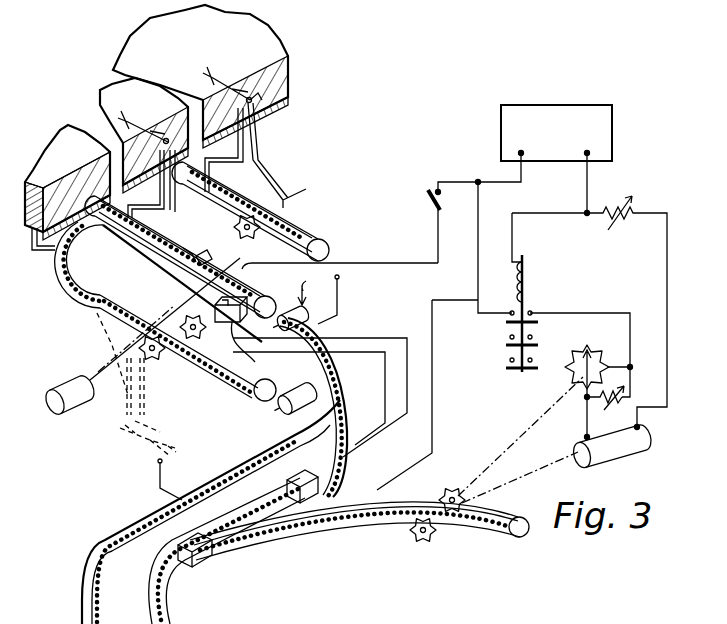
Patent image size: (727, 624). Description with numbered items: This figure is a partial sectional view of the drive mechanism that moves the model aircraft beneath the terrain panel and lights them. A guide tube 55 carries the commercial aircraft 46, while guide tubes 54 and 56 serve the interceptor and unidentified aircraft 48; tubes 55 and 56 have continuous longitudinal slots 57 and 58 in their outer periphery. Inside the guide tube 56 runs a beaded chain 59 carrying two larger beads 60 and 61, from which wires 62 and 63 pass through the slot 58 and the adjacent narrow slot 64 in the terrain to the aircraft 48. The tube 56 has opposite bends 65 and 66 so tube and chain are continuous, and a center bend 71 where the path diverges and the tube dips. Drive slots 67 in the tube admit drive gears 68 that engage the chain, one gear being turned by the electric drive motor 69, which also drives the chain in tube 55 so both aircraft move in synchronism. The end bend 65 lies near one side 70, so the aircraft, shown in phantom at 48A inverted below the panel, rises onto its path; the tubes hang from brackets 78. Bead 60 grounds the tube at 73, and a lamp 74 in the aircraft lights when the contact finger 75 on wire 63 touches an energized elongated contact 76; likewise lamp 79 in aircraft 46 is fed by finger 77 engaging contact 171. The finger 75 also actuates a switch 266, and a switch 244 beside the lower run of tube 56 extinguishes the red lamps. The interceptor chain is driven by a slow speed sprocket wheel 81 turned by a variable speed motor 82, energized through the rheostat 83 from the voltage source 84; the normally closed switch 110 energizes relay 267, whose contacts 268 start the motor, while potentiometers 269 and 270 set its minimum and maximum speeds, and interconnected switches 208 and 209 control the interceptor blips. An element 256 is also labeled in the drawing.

The side 70 is at (119, 56).
The unidentified aircraft 48 is at (141, 135).
The narrow slot 64 is at (77, 124).
The lamp 74 is at (166, 135).
The lamp 79 is at (250, 97).
The commercial aircraft 46 is at (253, 103).
The contact 171 is at (200, 137).
The contact finger 77 is at (288, 201).
The wire 62 is at (166, 204).
The wire 63 is at (177, 208).
The elongated contact means 76 is at (76, 230).
The guide tube 55 is at (324, 251).
The longitudinal slot 57 is at (268, 236).
The beaded chain 59 is at (290, 288).
The longitudinal slot 58 is at (214, 263).
The contact finger 75 is at (187, 250).
The guide tube 56 is at (238, 319).
The switch 266 is at (243, 354).
The larger bead 60 is at (125, 240).
The end bend 65 is at (78, 248).
The larger bead 61 is at (184, 280).
The drive slots 67 is at (175, 352).
The drive gears 68 is at (197, 319).
The unidentified aircraft in phantom 48A is at (98, 345).
The electric drive motor 69 is at (68, 413).
The brackets 78 is at (339, 284).
The ground 73 is at (311, 284).
The bend 71 is at (343, 382).
The bend 66 is at (82, 587).
The switch 244 is at (214, 567).
The conveyor 256 is at (348, 623).
The guide tube 54 is at (498, 537).
The slow speed sprocket wheel 81 is at (457, 490).
The voltage source 84 is at (612, 147).
The switch 110 is at (427, 195).
The potentiometer 269 is at (636, 213).
The relay 267 is at (532, 272).
The contacts 268 is at (532, 312).
The interceptor aircraft switch 208 is at (507, 345).
The interceptor aircraft switch 209 is at (507, 369).
The rheostat 83 is at (610, 348).
The potentiometer 270 is at (627, 396).
The variable speed motor 82 is at (634, 456).